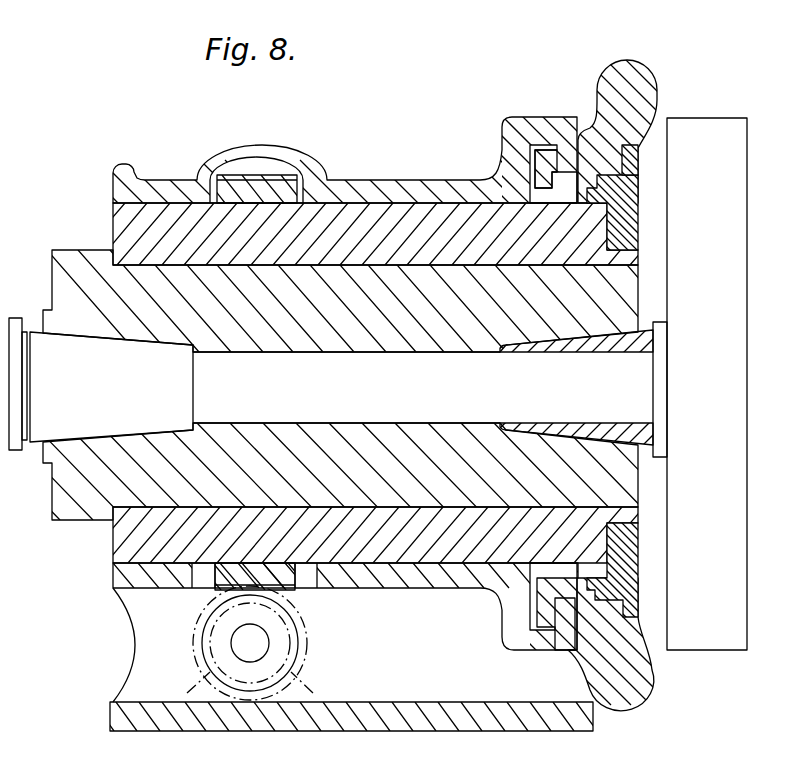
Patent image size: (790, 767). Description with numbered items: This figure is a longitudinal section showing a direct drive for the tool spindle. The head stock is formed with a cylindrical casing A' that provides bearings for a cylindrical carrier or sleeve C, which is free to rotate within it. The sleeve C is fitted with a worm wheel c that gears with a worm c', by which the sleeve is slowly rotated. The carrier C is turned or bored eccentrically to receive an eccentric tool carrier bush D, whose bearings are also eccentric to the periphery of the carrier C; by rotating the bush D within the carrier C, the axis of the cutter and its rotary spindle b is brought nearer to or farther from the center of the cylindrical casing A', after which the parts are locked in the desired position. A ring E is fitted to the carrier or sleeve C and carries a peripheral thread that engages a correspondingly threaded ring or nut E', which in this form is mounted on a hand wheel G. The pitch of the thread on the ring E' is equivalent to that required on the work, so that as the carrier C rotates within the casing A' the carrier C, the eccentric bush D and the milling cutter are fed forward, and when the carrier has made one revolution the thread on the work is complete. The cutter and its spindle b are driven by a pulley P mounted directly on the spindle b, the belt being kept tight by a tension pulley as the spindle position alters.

The cylindrical casing A' is at (395, 393).
The cylindrical carrier or sleeve C is at (377, 383).
The eccentric tool carrier bush D is at (395, 385).
The rotary spindle b is at (254, 384).
The hand wheel G is at (628, 70).
The ring E is at (451, 380).
The threaded ring or nut E' is at (451, 380).
The pulley P is at (707, 384).
The worm wheel c is at (263, 387).
The worm c' is at (261, 643).